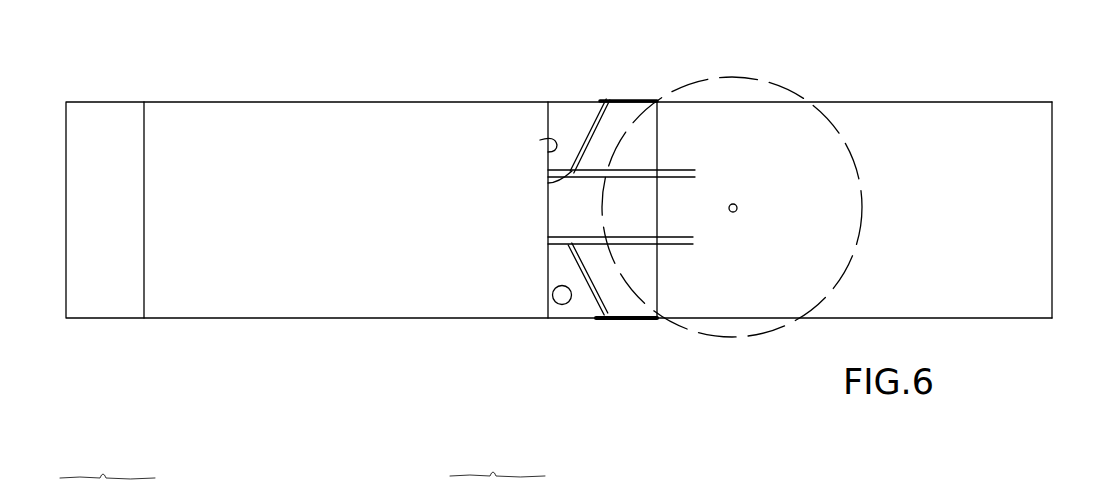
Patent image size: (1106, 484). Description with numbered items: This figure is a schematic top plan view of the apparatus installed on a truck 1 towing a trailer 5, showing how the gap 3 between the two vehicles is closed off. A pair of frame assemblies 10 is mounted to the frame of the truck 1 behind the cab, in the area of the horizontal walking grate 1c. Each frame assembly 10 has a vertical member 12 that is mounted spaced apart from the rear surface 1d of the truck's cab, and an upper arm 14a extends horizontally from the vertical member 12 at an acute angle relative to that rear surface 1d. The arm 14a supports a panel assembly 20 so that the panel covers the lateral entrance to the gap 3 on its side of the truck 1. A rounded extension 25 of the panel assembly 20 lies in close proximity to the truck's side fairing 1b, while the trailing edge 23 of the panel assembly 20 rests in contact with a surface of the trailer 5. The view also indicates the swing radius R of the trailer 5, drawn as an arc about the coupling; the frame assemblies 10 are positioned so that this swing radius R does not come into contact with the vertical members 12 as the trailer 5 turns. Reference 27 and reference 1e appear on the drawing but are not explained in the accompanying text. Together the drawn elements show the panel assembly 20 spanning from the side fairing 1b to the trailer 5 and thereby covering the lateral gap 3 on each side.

The truck 1 is at (258, 215).
The trailer 5 is at (988, 215).
The gap 3 is at (580, 218).
The frame assembly 10 is at (580, 122).
The vertical member 12 is at (565, 238).
The upper arm 14a is at (600, 122).
The panel assembly 20 is at (632, 101).
The trailing edge 23 is at (687, 101).
The rounded extension 25 is at (606, 100).
The surface 27 is at (700, 101).
The side fairing 1b is at (549, 101).
The walking grate 1c is at (684, 240).
The rear surface of the truck cab 1d is at (540, 140).
The bore 1e is at (737, 210).
The swing radius R is at (856, 226).